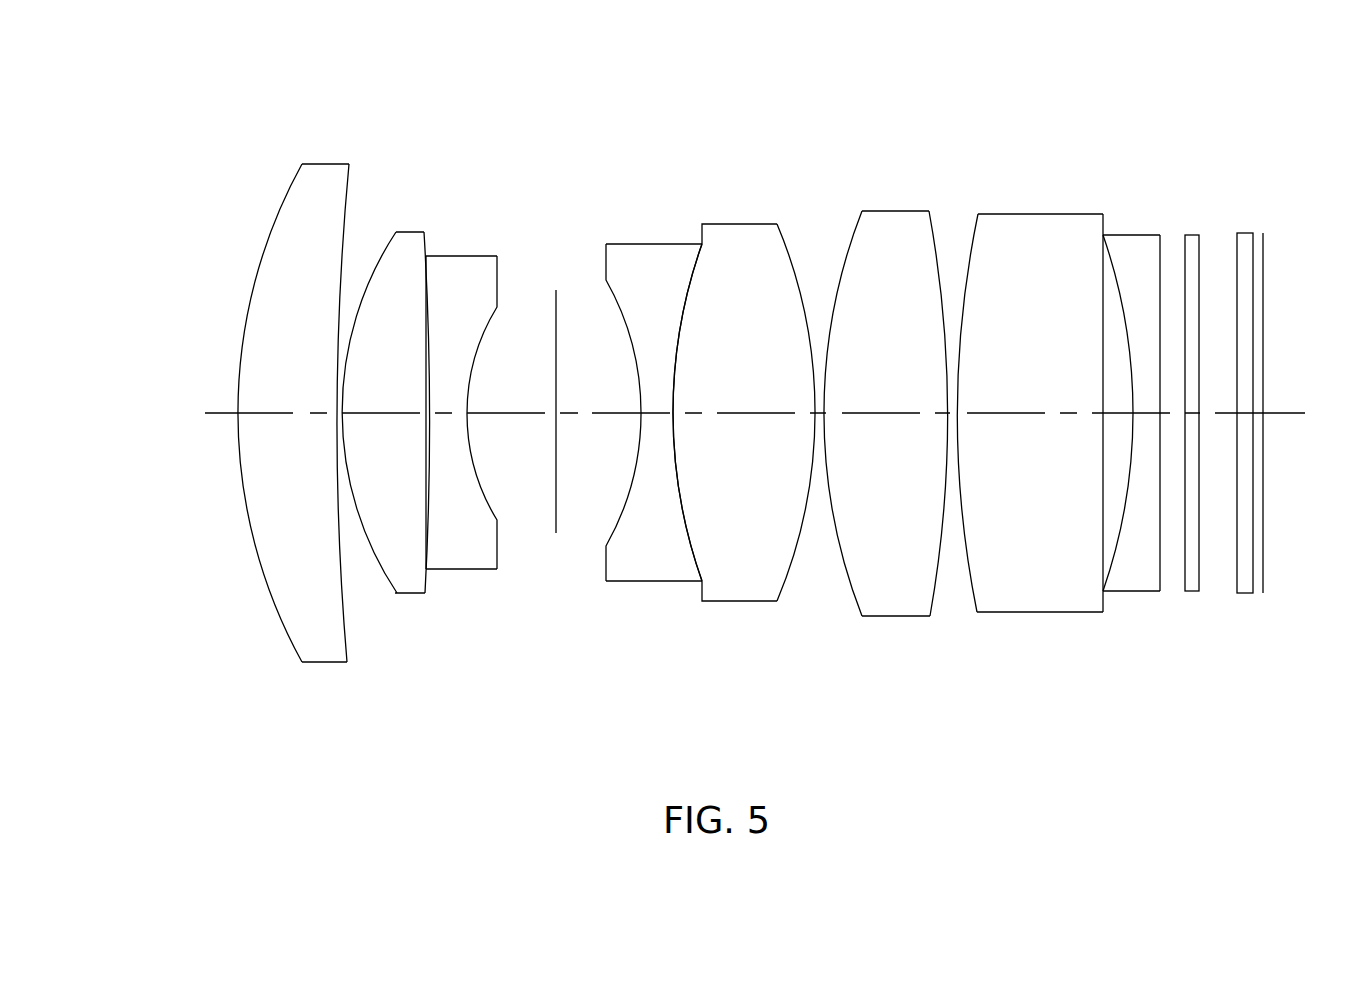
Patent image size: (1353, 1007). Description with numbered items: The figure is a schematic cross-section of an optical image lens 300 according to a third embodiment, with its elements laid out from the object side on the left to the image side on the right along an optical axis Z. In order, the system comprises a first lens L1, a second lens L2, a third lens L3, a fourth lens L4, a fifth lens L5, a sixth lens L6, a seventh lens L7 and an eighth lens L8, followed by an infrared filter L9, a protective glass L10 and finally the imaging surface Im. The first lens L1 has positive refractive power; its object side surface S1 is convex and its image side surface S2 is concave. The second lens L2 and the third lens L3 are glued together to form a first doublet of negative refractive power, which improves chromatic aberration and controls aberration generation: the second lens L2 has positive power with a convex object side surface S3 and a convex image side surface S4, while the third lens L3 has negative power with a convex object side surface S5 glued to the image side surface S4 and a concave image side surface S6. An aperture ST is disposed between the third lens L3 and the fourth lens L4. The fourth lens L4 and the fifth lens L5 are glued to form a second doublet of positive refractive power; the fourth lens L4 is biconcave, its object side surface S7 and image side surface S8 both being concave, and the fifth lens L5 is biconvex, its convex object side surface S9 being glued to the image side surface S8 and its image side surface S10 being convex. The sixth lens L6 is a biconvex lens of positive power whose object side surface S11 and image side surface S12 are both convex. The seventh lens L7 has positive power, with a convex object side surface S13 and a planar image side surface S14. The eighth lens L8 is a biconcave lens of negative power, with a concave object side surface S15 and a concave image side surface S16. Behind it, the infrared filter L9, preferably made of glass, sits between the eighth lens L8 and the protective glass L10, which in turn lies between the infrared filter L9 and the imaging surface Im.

The optical image lens 300 is at (222, 158).
The first lens L1 is at (298, 415).
The second lens L2 is at (394, 406).
The third lens L3 is at (489, 429).
The fourth lens L4 is at (646, 411).
The fifth lens L5 is at (751, 405).
The sixth lens L6 is at (901, 426).
The seventh lens L7 is at (1043, 421).
The eighth lens L8 is at (1184, 409).
The infrared filter L9 is at (1192, 237).
The protective glass L10 is at (1242, 233).
The aperture ST is at (556, 290).
The imaging surface Im is at (1263, 285).
The optical axis Z is at (732, 409).
The object side surface of the first lens S1 is at (293, 642).
The image side surface of the first lens S2 is at (347, 643).
The object side surface of the second lens S3 is at (373, 560).
The image side surface of the second lens S4 is at (427, 545).
The object side surface of the third lens S5 is at (427, 548).
The image side surface of the third lens S6 is at (486, 500).
The object side surface of the fourth lens S7 is at (622, 512).
The image side surface of the fourth lens S8 is at (692, 547).
The object side surface of the fifth lens S9 is at (690, 548).
The image side surface of the fifth lens S10 is at (788, 567).
The object side surface of the sixth lens S11 is at (848, 580).
The image side surface of the sixth lens S12 is at (933, 595).
The object side surface of the seventh lens S13 is at (968, 590).
The image side surface of the seventh lens S14 is at (1103, 558).
The object side surface of the eighth lens S15 is at (1120, 537).
The image side surface of the eighth lens S16 is at (1160, 567).